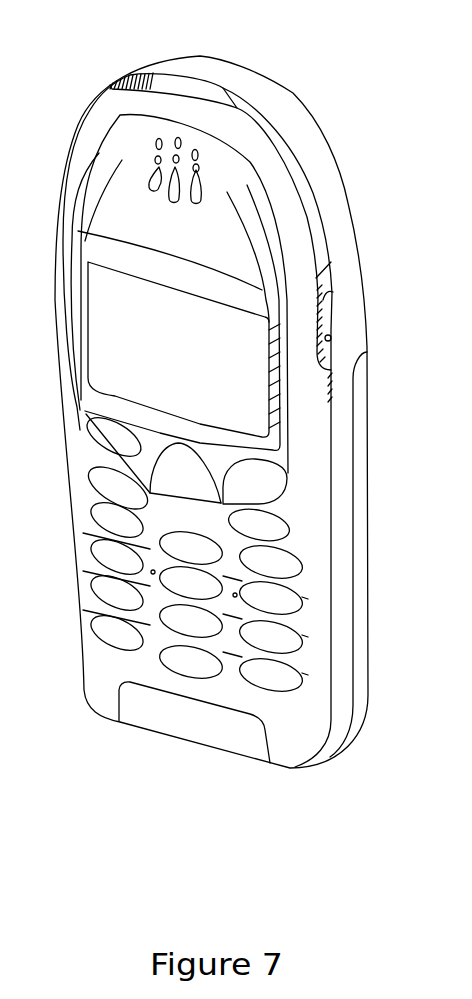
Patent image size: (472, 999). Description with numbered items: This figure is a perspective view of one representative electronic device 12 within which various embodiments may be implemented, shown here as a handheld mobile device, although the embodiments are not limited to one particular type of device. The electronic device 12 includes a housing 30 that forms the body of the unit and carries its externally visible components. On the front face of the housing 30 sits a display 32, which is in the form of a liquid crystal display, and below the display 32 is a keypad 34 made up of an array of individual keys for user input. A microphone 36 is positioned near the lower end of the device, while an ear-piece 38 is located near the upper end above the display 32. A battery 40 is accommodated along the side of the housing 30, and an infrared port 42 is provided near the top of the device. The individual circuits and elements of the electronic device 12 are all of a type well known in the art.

The electronic device 12 is at (314, 66).
The housing 30 is at (338, 203).
The display 32 is at (250, 385).
The keypad 34 is at (270, 678).
The microphone 36 is at (142, 714).
The ear-piece 38 is at (168, 164).
The battery 40 is at (360, 662).
The infrared port 42 is at (198, 90).